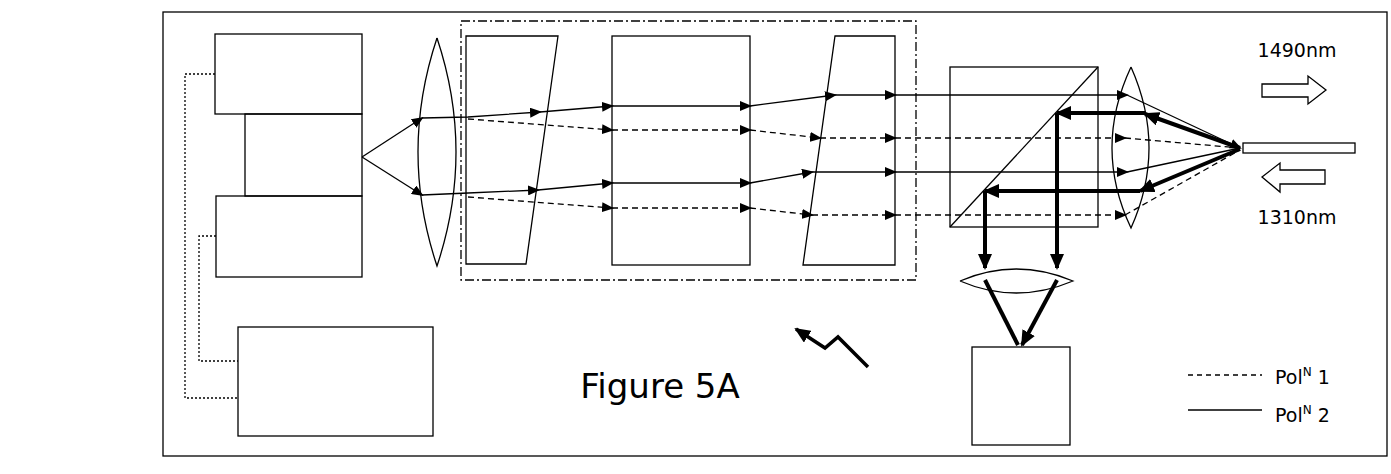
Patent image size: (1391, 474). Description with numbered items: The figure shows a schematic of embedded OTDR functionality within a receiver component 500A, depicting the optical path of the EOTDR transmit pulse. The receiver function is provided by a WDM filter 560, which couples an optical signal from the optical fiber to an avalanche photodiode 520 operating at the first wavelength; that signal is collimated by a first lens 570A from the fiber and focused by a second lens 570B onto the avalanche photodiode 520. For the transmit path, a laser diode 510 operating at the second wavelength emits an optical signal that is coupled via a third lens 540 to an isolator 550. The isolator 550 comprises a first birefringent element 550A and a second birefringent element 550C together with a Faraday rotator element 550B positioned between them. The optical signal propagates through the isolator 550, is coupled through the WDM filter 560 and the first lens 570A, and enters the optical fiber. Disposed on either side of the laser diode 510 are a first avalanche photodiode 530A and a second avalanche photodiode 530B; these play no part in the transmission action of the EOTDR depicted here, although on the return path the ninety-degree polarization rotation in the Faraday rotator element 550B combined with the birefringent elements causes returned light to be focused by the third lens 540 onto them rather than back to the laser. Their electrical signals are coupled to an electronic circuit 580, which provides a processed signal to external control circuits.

The optical transceiver assembly 500A is at (857, 366).
The laser source LD λ2 510 is at (303, 155).
The APD λ1 520 is at (1021, 396).
The first APD λ1 530A is at (288, 74).
The second APD λ1 530B is at (289, 236).
The third lens 540 is at (422, 151).
The isolator 550 is at (688, 169).
The first birefringent element 550A is at (512, 150).
The Faraday rotator element 550B is at (681, 150).
The second birefringent element 550C is at (849, 150).
The WDM filter 560 is at (1024, 136).
The first lens 570A is at (1151, 135).
The second lens 570B is at (1050, 281).
The electronic circuit 580 is at (309, 255).